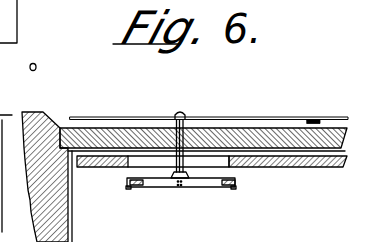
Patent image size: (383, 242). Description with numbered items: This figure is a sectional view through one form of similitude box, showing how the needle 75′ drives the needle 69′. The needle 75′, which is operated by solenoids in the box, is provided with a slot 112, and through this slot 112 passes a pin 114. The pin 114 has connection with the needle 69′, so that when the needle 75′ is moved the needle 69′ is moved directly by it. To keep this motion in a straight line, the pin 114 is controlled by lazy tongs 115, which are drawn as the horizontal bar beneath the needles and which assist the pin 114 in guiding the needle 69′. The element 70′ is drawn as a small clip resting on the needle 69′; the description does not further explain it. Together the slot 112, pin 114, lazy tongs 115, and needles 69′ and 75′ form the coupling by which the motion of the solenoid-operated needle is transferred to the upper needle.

The needle 69′ is at (97, 117).
The clip 70′ is at (313, 119).
The pin 114 is at (240, 98).
The needle 75′ is at (100, 168).
The slot 112 is at (230, 165).
The lazy tongs 115 is at (220, 189).